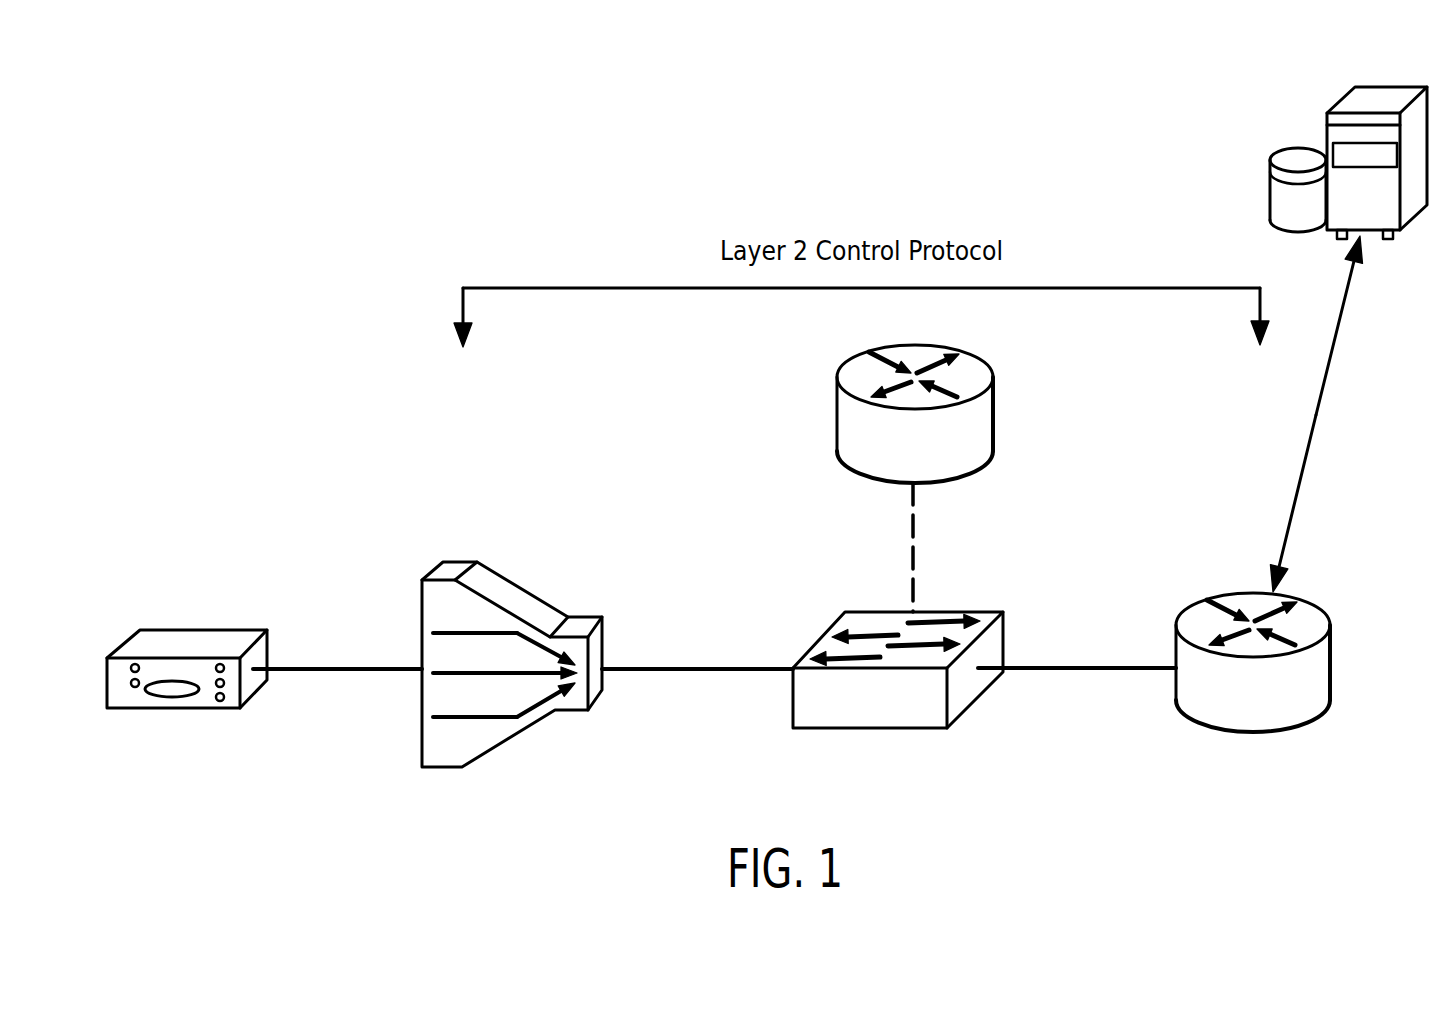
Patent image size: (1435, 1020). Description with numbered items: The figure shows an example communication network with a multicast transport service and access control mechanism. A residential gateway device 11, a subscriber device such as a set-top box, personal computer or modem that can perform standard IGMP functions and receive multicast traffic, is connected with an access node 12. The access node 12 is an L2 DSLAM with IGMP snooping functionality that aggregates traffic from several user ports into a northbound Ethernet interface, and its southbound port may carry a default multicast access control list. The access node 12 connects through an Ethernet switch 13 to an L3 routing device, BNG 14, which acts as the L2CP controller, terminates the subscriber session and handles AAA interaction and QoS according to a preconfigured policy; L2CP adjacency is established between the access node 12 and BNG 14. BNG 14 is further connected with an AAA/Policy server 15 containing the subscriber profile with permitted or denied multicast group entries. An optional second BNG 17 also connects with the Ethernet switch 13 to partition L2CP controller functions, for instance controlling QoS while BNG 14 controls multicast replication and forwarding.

The residential gateway (RG) device 11 is at (160, 630).
The access node 12 is at (457, 560).
The Ethernet switch 13 is at (965, 612).
The L3 routing device (BNG) 14 is at (1313, 602).
The AAA/Policy server 15 is at (1327, 118).
The second BNG 17 is at (837, 422).